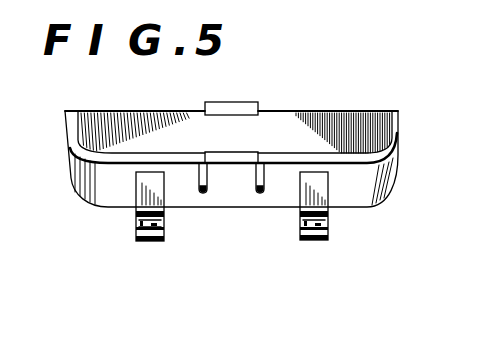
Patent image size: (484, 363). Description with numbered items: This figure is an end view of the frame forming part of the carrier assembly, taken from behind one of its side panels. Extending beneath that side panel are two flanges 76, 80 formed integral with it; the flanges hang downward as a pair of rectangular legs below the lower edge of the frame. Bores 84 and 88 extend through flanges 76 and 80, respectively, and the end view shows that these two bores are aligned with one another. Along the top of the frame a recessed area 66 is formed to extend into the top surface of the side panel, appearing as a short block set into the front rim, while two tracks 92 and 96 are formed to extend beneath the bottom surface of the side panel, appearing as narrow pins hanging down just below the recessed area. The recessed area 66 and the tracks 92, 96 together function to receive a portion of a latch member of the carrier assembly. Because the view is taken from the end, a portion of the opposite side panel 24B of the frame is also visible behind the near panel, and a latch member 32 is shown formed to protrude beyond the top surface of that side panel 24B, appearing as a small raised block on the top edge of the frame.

The side panel 24B is at (333, 118).
The latch member 32 is at (242, 108).
The recessed area 66 is at (212, 160).
The track 96 is at (203, 193).
The track 92 is at (260, 193).
The flange 80 is at (149, 243).
The flange 76 is at (315, 240).
The bore 88 is at (145, 214).
The bore 84 is at (318, 222).